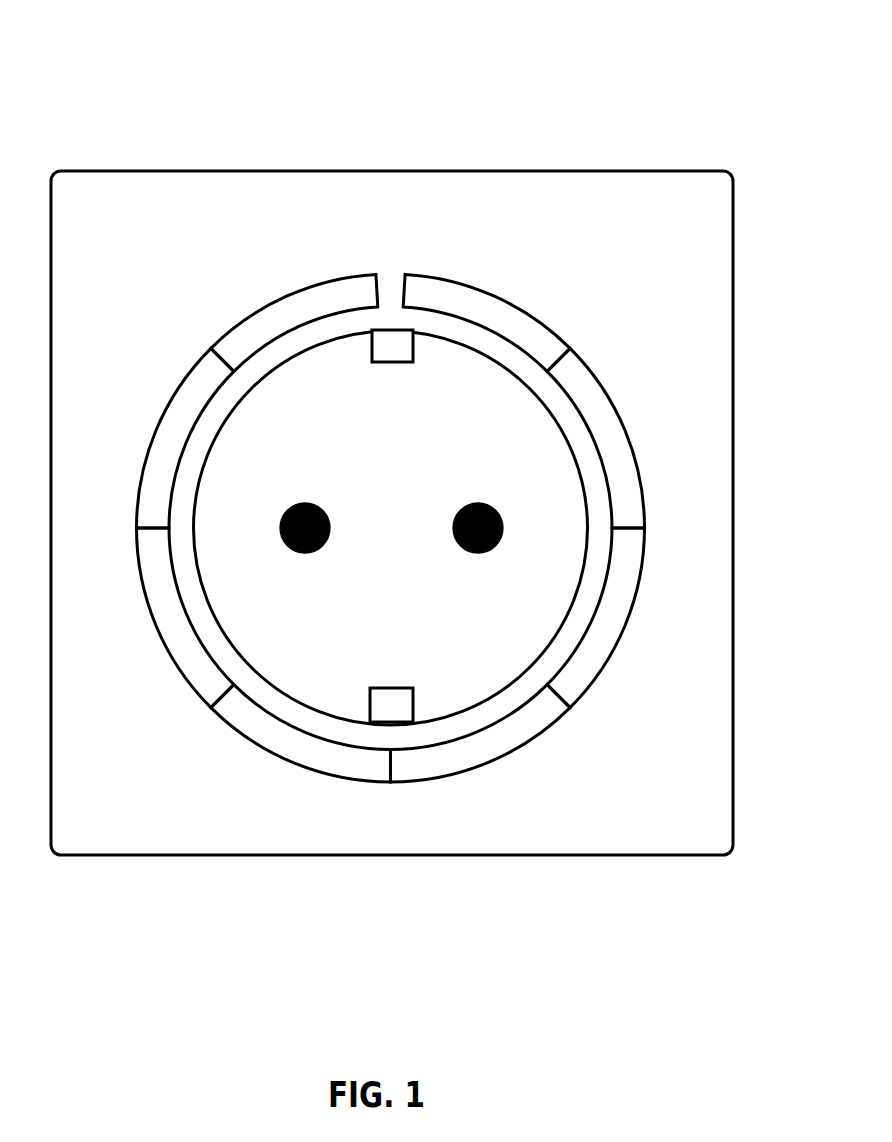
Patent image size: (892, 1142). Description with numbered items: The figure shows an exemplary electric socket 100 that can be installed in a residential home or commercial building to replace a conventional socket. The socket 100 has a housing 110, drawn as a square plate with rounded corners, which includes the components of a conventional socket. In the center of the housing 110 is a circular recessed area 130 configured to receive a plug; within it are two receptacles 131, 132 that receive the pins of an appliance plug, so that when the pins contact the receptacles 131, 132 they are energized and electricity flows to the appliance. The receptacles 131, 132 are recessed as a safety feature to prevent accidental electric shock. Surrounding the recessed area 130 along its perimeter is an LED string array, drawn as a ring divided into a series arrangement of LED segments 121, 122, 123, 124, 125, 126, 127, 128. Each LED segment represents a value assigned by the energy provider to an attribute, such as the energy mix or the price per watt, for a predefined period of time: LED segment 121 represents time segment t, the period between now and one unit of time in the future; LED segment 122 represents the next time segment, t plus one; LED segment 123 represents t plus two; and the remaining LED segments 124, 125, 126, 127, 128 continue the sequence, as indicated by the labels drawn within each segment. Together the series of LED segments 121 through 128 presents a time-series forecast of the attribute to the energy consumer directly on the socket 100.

The socket 100 is at (421, 34).
The housing 110 is at (733, 447).
The LED segment 121 is at (518, 300).
The LED segment 122 is at (620, 408).
The LED segment 123 is at (628, 630).
The LED segment 124 is at (510, 757).
The LED segment 125 is at (290, 763).
The LED segment 126 is at (160, 640).
The LED segment 127 is at (157, 427).
The LED segment 128 is at (267, 300).
The recessed area 130 is at (411, 405).
The receptacle 131 is at (325, 510).
The receptacle 132 is at (480, 505).